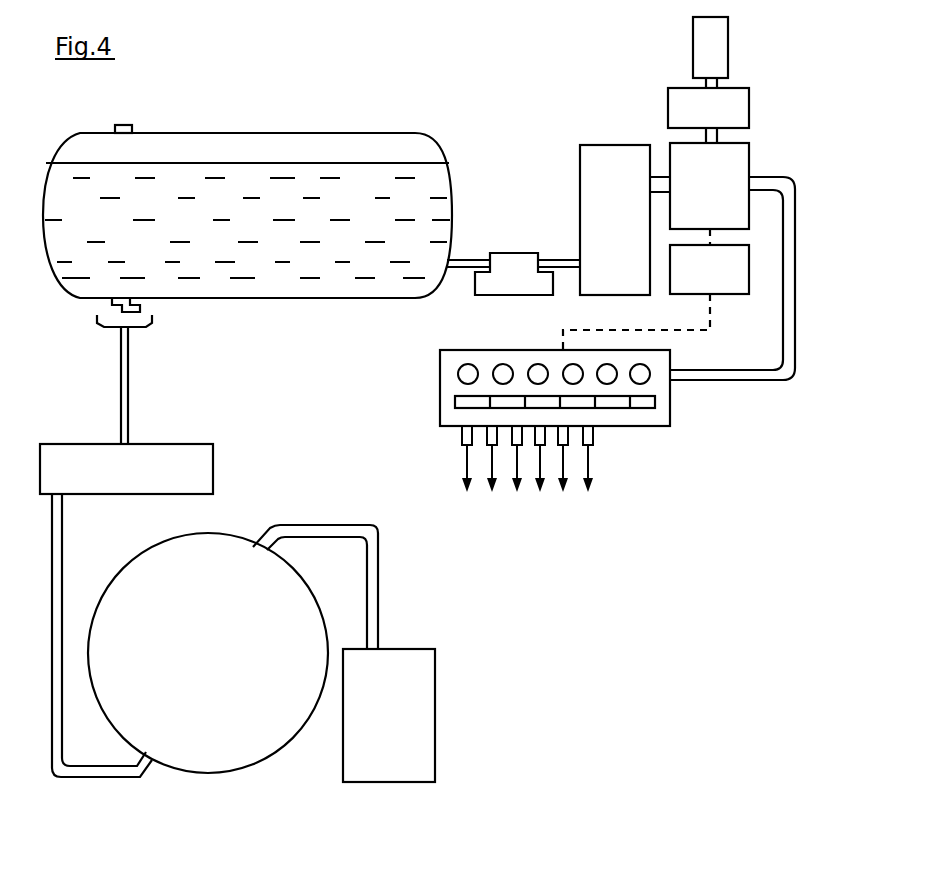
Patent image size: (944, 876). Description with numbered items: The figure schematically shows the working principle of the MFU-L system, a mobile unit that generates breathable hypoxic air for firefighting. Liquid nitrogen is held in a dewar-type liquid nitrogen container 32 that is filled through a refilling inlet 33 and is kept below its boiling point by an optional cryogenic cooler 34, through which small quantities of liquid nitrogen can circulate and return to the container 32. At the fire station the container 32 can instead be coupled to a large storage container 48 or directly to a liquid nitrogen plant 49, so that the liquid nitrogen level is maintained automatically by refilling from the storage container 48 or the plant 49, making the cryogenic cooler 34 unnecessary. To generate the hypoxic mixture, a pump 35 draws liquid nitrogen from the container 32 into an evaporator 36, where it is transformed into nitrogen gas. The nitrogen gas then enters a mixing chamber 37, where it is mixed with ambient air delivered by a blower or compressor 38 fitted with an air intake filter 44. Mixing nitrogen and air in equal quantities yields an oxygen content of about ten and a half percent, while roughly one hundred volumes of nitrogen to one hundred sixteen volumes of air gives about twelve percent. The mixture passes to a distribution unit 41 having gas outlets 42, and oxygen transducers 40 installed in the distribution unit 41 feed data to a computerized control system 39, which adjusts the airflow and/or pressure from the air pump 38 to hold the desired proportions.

The liquid nitrogen container 32 is at (228, 152).
The refilling inlet 33 is at (127, 125).
The cryogenic cooler 34 is at (153, 453).
The pump 35 is at (517, 250).
The evaporator 36 is at (595, 195).
The mixing chamber 37 is at (737, 158).
The blower or compressor 38 is at (688, 110).
The computerized control system 39 is at (730, 275).
The oxygen transducers 40 is at (497, 363).
The distribution unit 41 is at (672, 408).
The gas outlets 42 is at (533, 443).
The air intake filter 44 is at (705, 60).
The storage container 48 is at (225, 555).
The liquid nitrogen plant 49 is at (425, 680).